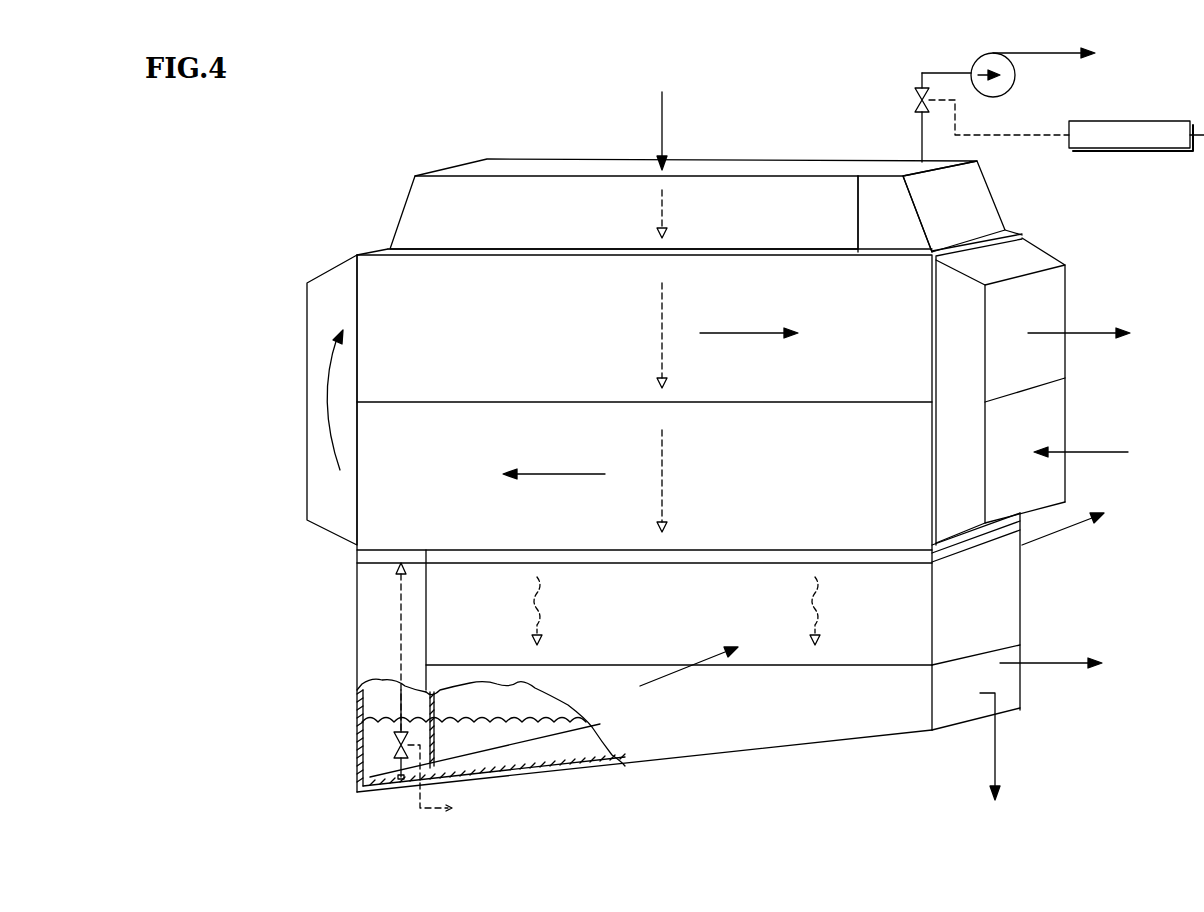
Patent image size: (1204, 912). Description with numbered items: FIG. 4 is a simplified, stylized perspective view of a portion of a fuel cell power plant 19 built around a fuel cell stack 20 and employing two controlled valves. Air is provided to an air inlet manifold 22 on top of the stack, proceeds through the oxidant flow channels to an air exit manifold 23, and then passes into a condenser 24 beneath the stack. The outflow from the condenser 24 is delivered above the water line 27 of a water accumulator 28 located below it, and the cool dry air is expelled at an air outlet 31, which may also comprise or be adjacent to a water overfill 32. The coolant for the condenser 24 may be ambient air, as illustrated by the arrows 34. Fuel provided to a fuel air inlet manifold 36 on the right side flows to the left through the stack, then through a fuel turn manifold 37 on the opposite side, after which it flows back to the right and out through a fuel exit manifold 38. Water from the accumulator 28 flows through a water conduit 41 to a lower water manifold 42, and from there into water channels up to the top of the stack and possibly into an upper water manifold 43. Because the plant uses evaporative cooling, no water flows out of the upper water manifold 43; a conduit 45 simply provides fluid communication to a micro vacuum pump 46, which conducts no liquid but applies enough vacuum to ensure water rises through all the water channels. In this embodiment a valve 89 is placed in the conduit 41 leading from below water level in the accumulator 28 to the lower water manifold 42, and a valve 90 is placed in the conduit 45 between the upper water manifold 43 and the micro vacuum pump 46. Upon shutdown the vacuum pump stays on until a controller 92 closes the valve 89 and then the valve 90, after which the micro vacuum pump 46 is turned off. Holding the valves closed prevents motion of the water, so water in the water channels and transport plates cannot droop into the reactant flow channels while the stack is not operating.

The fuel cell power plant 19 is at (436, 129).
The fuel cell stack 20 is at (566, 367).
The air inlet manifold 22 is at (737, 169).
The air exit manifold 23 is at (744, 559).
The condenser 24 is at (680, 604).
The water line 27 is at (527, 720).
The water accumulator 28 is at (740, 709).
The air outlet 31 is at (1040, 663).
The water overfill 32 is at (997, 766).
The arrows 34 is at (652, 683).
The fuel air inlet manifold 36 is at (1060, 433).
The fuel turn manifold 37 is at (322, 347).
The fuel exit manifold 38 is at (1052, 313).
The water conduit 41 is at (398, 717).
The lower water manifold 42 is at (372, 556).
The upper water manifold 43 is at (970, 190).
The conduit 45 is at (920, 142).
The micro vacuum pump 46 is at (1010, 80).
The valve 89 is at (392, 745).
The valve 90 is at (917, 100).
The controller 92 is at (1120, 121).